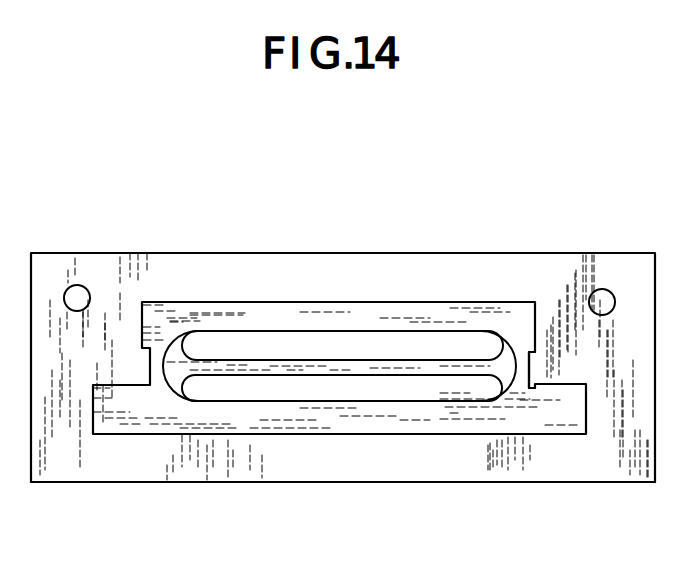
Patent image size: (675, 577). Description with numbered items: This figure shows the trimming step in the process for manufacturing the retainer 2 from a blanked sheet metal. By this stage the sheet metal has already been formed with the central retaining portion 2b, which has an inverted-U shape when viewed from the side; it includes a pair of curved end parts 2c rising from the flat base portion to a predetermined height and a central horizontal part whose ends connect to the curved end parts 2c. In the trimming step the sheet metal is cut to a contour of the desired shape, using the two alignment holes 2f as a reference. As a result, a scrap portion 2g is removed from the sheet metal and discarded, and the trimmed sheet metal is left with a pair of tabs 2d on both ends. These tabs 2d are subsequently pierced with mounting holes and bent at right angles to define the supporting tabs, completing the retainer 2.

The retainer 2 is at (384, 307).
The central retaining portion 2b is at (342, 365).
The curved end part 2c is at (512, 352).
The tab 2d is at (568, 417).
The alignment hole 2f is at (80, 285).
The scrap portion 2g is at (474, 452).